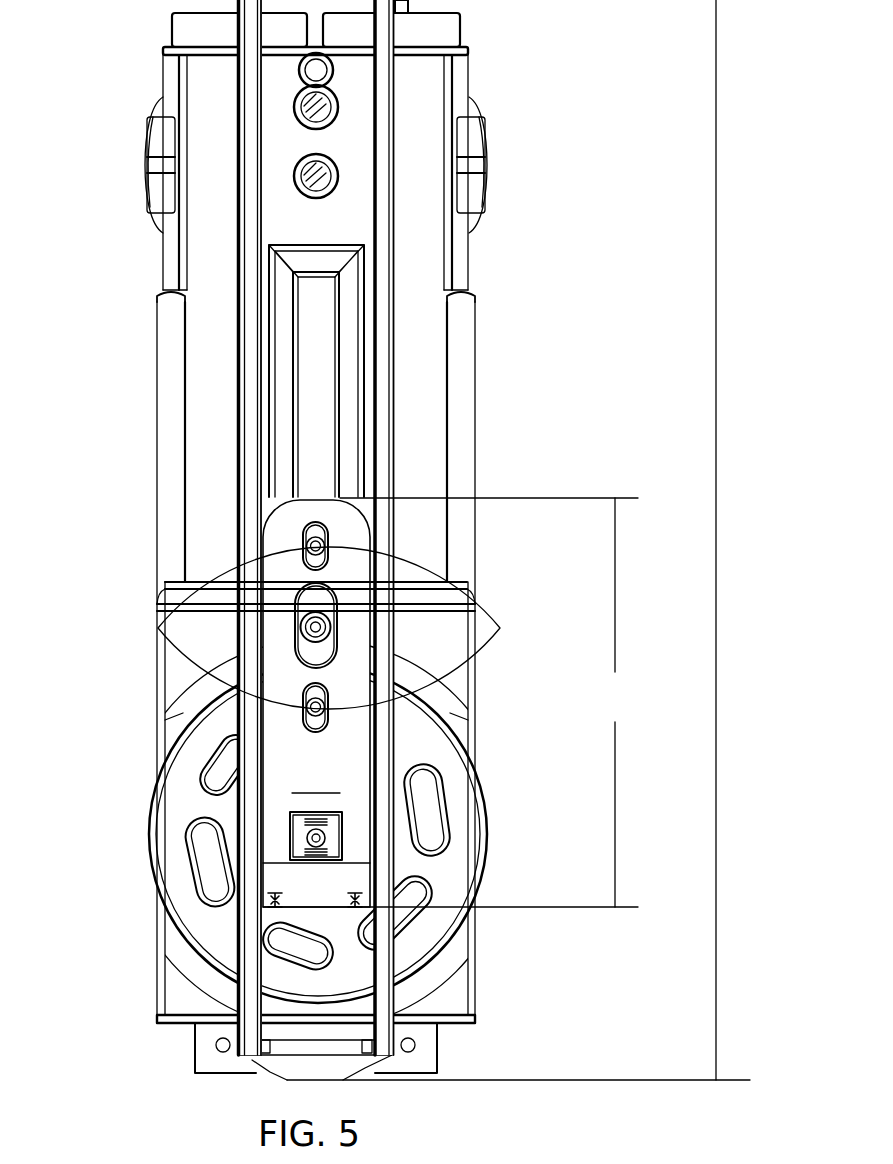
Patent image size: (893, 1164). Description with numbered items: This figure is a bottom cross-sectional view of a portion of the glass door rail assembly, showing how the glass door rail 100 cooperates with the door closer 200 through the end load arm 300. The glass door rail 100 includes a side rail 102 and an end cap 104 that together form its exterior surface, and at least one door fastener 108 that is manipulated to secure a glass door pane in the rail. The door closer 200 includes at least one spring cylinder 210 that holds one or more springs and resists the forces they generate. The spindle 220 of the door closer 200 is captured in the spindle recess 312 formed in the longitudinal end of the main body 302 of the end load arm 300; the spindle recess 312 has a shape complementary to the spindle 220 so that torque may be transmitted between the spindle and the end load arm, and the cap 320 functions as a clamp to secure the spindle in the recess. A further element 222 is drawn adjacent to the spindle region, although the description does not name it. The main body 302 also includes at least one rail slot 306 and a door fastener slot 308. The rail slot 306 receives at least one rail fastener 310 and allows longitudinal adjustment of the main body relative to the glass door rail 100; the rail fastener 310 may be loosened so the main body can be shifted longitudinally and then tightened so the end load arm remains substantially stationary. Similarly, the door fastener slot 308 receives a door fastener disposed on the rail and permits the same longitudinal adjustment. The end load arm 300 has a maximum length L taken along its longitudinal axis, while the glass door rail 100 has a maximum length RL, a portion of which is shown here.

The glass door rail 100 is at (225, 428).
The side rail 102 is at (382, 358).
The end cap 104 is at (287, 1066).
The door fastener 108 is at (322, 628).
The door closer 200 is at (135, 349).
The spring cylinder 210 is at (413, 42).
The spindle 220 is at (330, 847).
The disc slot 222 is at (423, 873).
The end load arm 300 is at (291, 753).
The main body 302 is at (316, 703).
The rail slot 306 is at (500, 630).
The door fastener slot 308 is at (314, 627).
The rail fastener 310 is at (157, 628).
The spindle recess 312 is at (287, 830).
The cap 320 is at (305, 880).
The maximum length of the end load arm L is at (450, 702).
The maximum length of the glass door rail RL is at (518, 540).